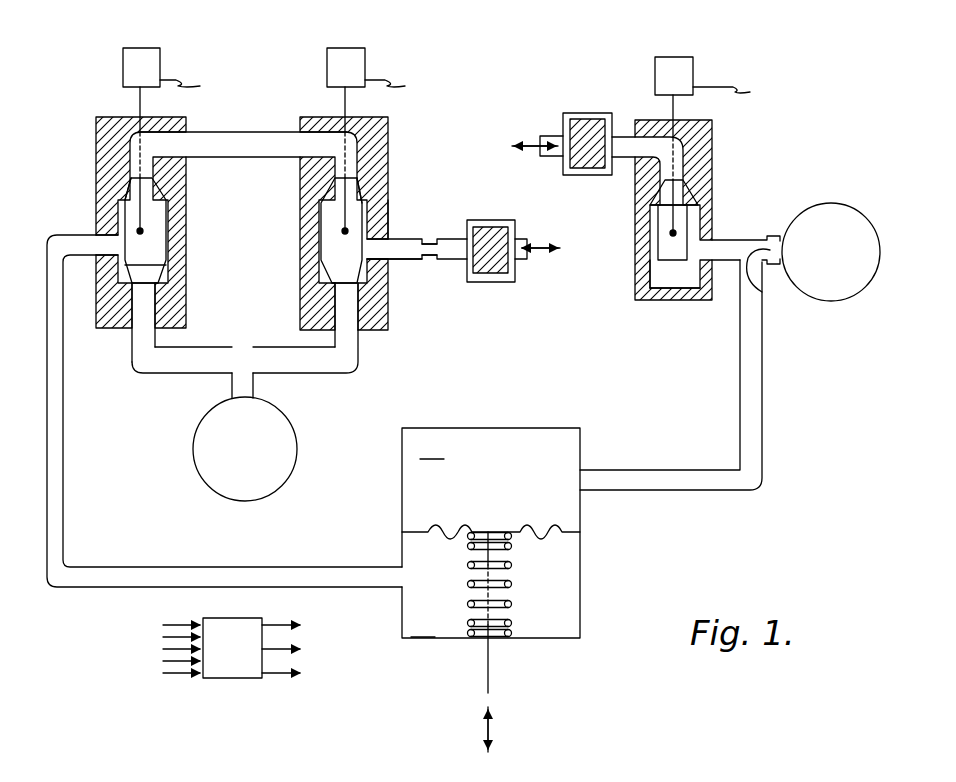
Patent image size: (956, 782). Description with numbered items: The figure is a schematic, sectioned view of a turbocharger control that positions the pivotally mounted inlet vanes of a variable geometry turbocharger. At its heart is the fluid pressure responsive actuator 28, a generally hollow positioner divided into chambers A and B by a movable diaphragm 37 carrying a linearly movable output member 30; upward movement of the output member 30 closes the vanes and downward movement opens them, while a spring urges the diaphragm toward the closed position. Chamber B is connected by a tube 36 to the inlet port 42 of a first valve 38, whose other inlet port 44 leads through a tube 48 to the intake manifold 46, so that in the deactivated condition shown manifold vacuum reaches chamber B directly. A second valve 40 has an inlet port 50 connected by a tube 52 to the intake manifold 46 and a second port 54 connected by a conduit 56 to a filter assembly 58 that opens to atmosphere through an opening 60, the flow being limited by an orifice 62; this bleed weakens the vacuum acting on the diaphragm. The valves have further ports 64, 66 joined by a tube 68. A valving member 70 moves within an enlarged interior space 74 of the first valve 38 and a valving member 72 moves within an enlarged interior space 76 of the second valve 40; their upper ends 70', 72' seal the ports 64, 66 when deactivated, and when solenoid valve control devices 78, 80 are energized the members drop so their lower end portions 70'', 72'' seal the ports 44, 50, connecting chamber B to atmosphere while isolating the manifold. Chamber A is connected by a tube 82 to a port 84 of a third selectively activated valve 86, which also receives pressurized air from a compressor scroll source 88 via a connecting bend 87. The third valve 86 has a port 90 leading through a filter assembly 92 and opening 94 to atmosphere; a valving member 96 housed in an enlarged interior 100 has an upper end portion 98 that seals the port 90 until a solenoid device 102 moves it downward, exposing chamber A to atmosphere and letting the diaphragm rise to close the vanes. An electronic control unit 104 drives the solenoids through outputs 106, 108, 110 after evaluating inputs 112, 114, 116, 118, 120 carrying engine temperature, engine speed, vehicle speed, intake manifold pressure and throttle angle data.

The fluid pressure responsive actuator 28 is at (584, 600).
The output member 30 is at (486, 683).
The tube 36 is at (66, 476).
The diaphragm 37 is at (457, 530).
The first valve 38 is at (193, 238).
The second valve 40 is at (300, 238).
The inlet port 42 is at (103, 239).
The inlet port 44 is at (132, 328).
The intake manifold 46 is at (297, 446).
The tube 48 is at (175, 373).
The inlet port 50 is at (355, 328).
The tube 52 is at (320, 373).
The second port 54 is at (403, 260).
The conduit 56 is at (407, 238).
The filter assembly 58 is at (489, 288).
The opening 60 is at (532, 245).
The orifice 62 is at (440, 246).
The port 64 is at (188, 136).
The port 66 is at (300, 136).
The tube 68 is at (243, 143).
The valving member 70 is at (176, 185).
The upper end 70' is at (90, 184).
The lower end portion 70'' is at (182, 293).
The valving member 72 is at (311, 185).
The upper end 72' is at (315, 190).
The lower end portion 72'' is at (307, 289).
The enlarged interior space 74 is at (168, 266).
The enlarged interior space 76 is at (390, 215).
The valve control device 78 is at (146, 50).
The valve control device 80 is at (350, 50).
The tube 82 is at (745, 402).
The port 84 is at (714, 244).
The third selectively activated valve 86 is at (646, 280).
The conduit bend 87 is at (762, 288).
The source of pressurized air 88 is at (830, 203).
The port 90 is at (640, 134).
The filter assembly 92 is at (590, 108).
The opening 94 is at (545, 158).
The valving member 96 is at (690, 214).
The upper end portion 98 is at (690, 195).
The enlarged interior 100 is at (655, 300).
The solenoid device 102 is at (688, 58).
The electronic control unit 104 is at (234, 680).
The output 106 is at (180, 80).
The output 108 is at (400, 80).
The output 110 is at (745, 87).
The input 112 is at (175, 625).
The input 114 is at (175, 637).
The input 116 is at (175, 649).
The input 118 is at (175, 661).
The input 120 is at (178, 673).